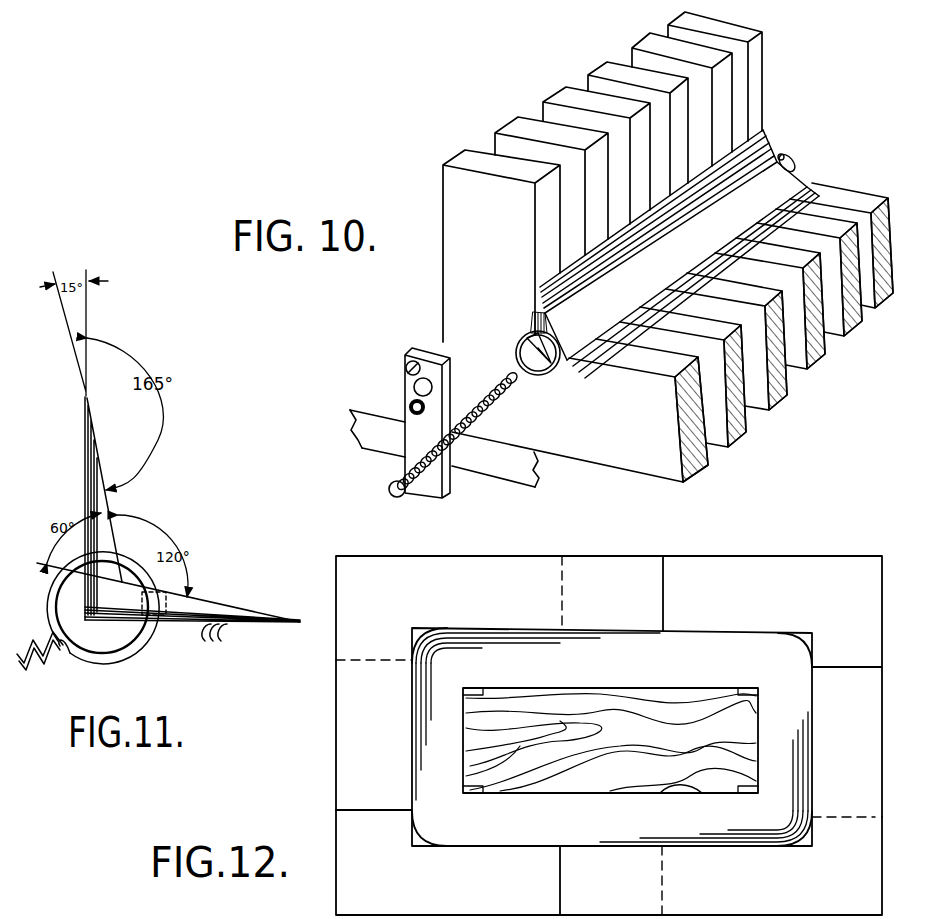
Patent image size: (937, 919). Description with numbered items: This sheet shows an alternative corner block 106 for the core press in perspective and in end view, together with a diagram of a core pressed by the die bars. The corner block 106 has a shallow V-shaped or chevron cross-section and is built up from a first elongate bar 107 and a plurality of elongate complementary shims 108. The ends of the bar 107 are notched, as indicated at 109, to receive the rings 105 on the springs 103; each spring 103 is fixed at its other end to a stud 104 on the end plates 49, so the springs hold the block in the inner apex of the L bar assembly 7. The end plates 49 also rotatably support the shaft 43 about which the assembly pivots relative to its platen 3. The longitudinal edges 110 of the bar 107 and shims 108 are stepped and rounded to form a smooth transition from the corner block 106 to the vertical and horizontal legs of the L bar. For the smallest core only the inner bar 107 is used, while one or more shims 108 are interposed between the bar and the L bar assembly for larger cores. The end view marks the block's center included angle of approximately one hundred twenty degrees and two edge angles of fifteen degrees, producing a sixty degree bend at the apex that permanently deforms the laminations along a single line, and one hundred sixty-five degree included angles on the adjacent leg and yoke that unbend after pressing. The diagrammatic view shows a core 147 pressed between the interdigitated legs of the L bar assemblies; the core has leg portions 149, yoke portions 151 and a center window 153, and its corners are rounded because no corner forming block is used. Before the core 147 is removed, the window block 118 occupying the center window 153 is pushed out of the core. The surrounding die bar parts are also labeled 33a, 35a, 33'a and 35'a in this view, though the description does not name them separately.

In FIG. 10, the platen 3 is at (512, 470).
In FIG. 10, the L bar assembly 7 is at (484, 100).
In FIG. 10, the shaft 43 is at (416, 387).
In FIG. 10, the end plates 49 is at (410, 442).
In FIG. 10, the springs 103 is at (490, 412).
In FIG. 11, the springs 103 is at (64, 652).
In FIG. 10, the stud 104 is at (399, 498).
In FIG. 10, the ring 105 is at (550, 377).
In FIG. 11, the ring 105 is at (136, 658).
In FIG. 10, the corner block 106 is at (652, 236).
In FIG. 11, the corner block 106 is at (168, 524).
In FIG. 10, the first elongate bar 107 is at (558, 320).
In FIG. 11, the first elongate bar 107 is at (228, 602).
In FIG. 10, the shims 108 is at (562, 290).
In FIG. 11, the shims 108 is at (232, 637).
In FIG. 10, the notches 109 is at (796, 170).
In FIG. 11, the notches 109 is at (163, 590).
In FIG. 11, the longitudinal edges 110 is at (94, 442).
In FIG. 12, the window block 118 is at (585, 768).
In FIG. 12, the core 147 is at (553, 674).
In FIG. 12, the leg portions 149 is at (648, 604).
In FIG. 12, the yoke portions 151 is at (430, 752).
In FIG. 12, the center window 153 is at (686, 789).
In FIG. 12, the frame member 33'a is at (499, 670).
In FIG. 12, the frame member 35'a is at (772, 671).
In FIG. 12, the frame member 33a is at (355, 889).
In FIG. 12, the frame member 35a is at (862, 900).